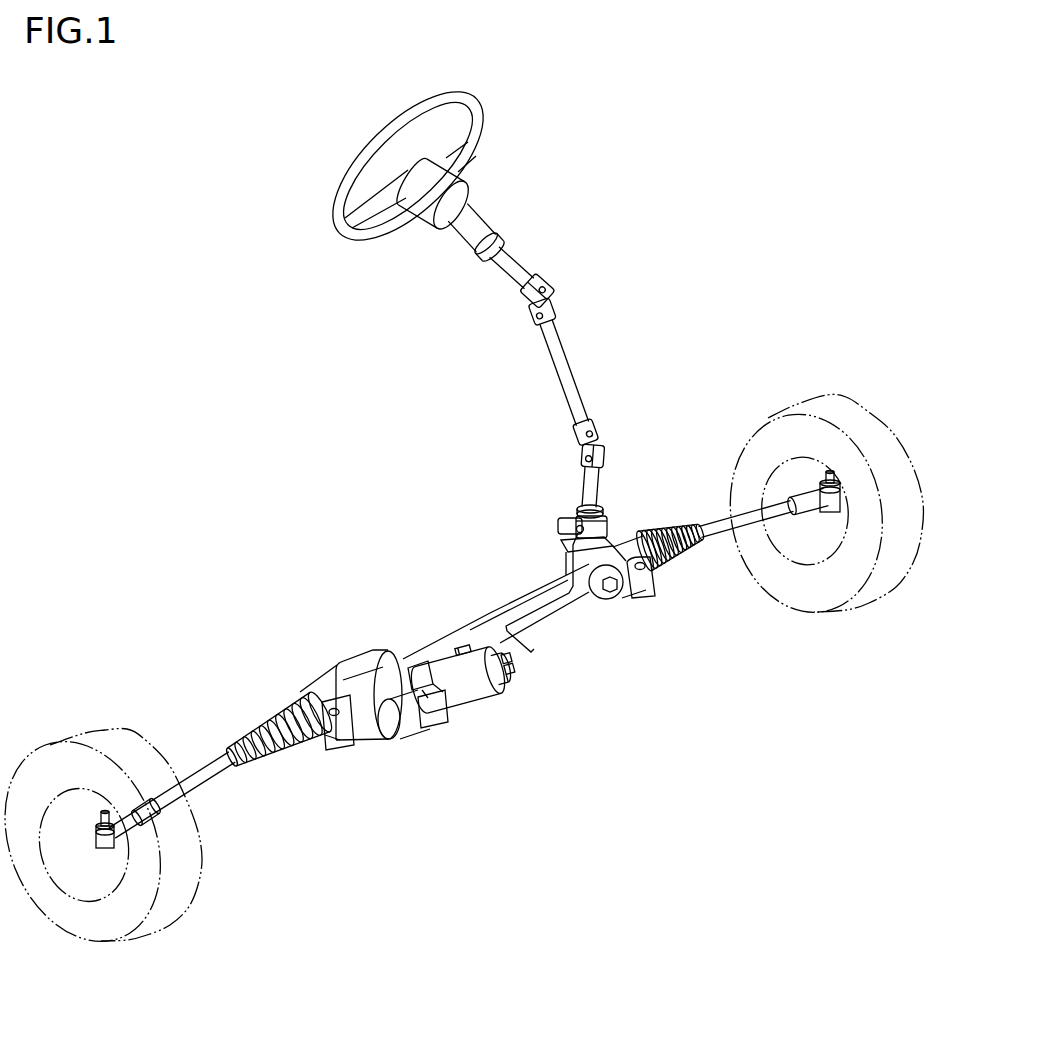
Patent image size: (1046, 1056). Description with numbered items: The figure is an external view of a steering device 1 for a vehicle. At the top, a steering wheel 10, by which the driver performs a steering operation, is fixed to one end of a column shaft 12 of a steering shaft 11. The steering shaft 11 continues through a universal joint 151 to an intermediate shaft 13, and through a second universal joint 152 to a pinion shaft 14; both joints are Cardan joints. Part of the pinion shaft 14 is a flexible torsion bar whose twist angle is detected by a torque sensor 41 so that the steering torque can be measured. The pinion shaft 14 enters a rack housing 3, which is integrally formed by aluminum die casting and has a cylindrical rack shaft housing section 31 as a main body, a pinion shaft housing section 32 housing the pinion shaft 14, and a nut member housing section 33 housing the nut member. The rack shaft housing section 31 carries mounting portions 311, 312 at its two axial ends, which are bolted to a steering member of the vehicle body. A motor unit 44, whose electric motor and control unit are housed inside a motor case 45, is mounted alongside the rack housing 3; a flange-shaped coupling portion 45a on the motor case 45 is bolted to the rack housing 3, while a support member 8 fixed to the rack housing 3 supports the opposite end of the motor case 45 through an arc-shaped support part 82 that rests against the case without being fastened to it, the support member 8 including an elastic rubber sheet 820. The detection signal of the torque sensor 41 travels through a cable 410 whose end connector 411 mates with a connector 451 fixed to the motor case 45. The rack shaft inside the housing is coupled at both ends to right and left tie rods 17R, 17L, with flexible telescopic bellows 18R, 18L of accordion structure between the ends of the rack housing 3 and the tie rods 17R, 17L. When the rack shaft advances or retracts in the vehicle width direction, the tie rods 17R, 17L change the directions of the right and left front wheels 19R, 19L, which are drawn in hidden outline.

The steering device 1 is at (567, 238).
The steering wheel 10 is at (477, 131).
The steering shaft 11 is at (455, 306).
The column shaft 12 is at (516, 279).
The intermediate shaft 13 is at (555, 347).
The pinion shaft 14 is at (588, 485).
The universal joint 151 is at (533, 308).
The universal joint 152 is at (580, 450).
The rack housing 3 is at (404, 630).
The rack shaft housing section 31 is at (557, 608).
The mounting portion 311 is at (340, 742).
The mounting portion 312 is at (654, 588).
The pinion shaft housing section 32 is at (607, 522).
The nut member housing section 33 is at (367, 722).
The torque sensor 41 is at (560, 530).
The cable 410 is at (509, 663).
The connector 411 is at (511, 671).
The motor unit 44 is at (494, 709).
The motor case 45 is at (465, 704).
The coupling portion 45a is at (441, 719).
The connector 451 is at (506, 683).
The support member 8 is at (457, 643).
The support part 82 is at (467, 643).
The rubber sheet 820 is at (472, 643).
The tie rod 17L is at (735, 525).
The tie rod 17R is at (221, 762).
The telescopic bellows 18L is at (680, 523).
The telescopic bellows 18R is at (281, 716).
The front wheel 19L is at (797, 405).
The front wheel 19R is at (88, 733).